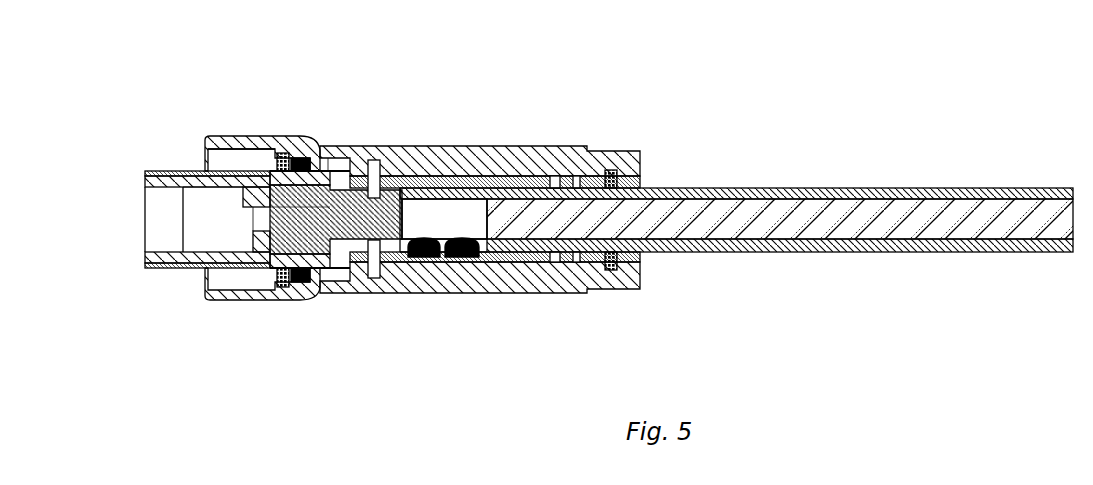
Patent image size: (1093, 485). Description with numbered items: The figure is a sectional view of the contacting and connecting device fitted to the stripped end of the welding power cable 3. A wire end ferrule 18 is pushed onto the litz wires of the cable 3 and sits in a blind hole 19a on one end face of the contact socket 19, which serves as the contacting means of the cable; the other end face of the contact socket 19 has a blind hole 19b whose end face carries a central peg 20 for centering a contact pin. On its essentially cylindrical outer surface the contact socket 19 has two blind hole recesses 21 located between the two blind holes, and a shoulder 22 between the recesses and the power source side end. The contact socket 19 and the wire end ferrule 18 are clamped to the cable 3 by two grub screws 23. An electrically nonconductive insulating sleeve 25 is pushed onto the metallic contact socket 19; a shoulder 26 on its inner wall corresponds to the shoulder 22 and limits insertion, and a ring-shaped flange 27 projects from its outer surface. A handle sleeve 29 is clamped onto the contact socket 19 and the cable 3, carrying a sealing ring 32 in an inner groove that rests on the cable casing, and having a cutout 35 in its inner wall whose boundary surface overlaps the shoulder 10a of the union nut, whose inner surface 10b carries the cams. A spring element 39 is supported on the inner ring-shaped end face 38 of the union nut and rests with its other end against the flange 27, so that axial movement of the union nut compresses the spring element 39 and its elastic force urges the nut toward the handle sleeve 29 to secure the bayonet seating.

The welding power cable 3 is at (808, 158).
The shoulder of the union nut 10a is at (328, 160).
The inner surface of the union nut 10b is at (205, 137).
The wire end ferrule 18 is at (457, 176).
The contact socket 19 is at (356, 245).
The blind hole 19a is at (466, 216).
The blind hole 19b is at (168, 222).
The central peg 20 is at (257, 228).
The blind hole recesses 21 is at (386, 260).
The shoulder 22 is at (264, 272).
The grub screws 23 is at (430, 257).
The insulating sleeve 25 is at (173, 170).
The shoulder of the insulating sleeve 26 is at (257, 137).
The ring-shaped flange 27 is at (277, 292).
The handle sleeve 29 is at (552, 124).
The sealing ring 32 is at (620, 268).
The cutout 35 is at (345, 160).
The inner ring-shaped end face 38 is at (320, 283).
The spring element 39 is at (307, 160).